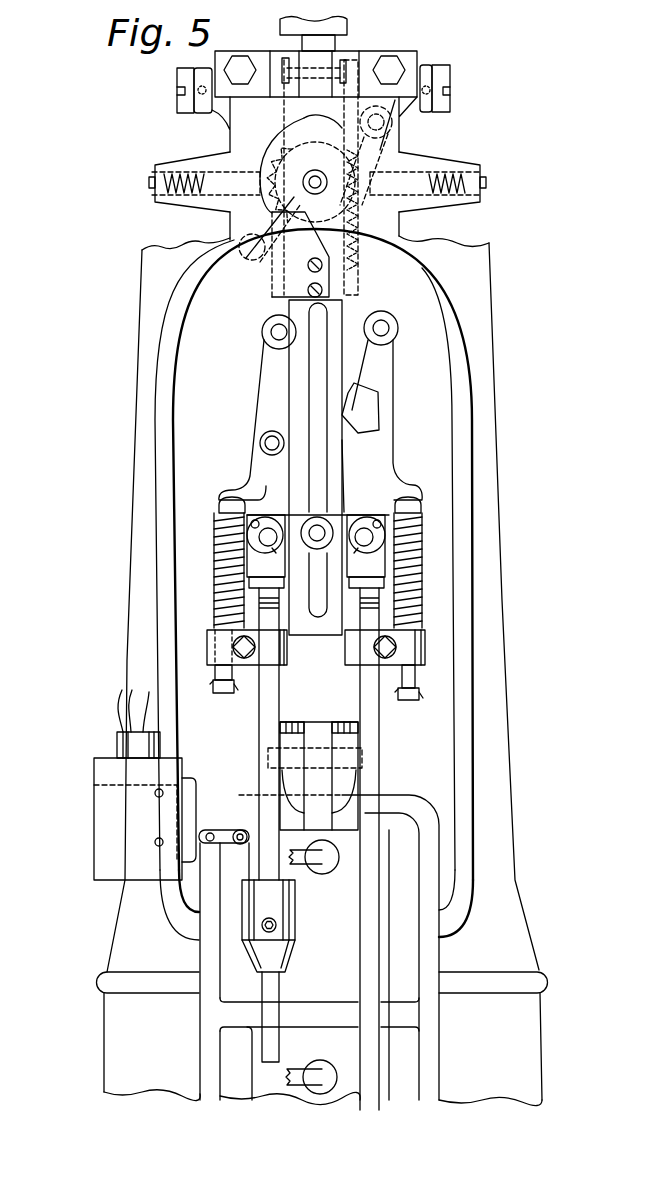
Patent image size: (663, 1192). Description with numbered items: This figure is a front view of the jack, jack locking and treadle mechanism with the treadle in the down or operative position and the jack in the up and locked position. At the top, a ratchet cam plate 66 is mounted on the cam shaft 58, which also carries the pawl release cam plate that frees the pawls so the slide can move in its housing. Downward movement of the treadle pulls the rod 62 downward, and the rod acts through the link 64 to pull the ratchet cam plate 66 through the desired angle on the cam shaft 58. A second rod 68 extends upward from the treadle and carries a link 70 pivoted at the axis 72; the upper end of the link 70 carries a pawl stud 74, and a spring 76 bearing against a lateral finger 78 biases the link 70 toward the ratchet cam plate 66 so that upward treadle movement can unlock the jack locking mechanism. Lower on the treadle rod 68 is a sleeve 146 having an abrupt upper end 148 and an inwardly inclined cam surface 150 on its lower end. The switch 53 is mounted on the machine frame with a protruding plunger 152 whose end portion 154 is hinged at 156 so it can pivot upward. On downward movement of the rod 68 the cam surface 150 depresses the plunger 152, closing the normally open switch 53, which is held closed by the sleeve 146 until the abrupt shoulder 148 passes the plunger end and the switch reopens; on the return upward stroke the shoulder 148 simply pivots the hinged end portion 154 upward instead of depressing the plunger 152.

The switch S-3 53 is at (103, 813).
The cam shaft 58 is at (348, 228).
The rod 62 is at (378, 730).
The link 64 is at (389, 377).
The ratchet cam plate 66 is at (318, 136).
The second rod 68 is at (262, 706).
The link 70 is at (273, 378).
The axis 72 is at (262, 518).
The pawl stud 74 is at (265, 326).
The spring 76 is at (220, 562).
The lateral finger 78 is at (238, 488).
The sleeve 146 is at (287, 918).
The abrupt upper end 148 is at (292, 872).
The cam surface 150 is at (290, 957).
The plunger 152 is at (240, 830).
The end portion 154 is at (270, 800).
The hinge 156 is at (208, 830).